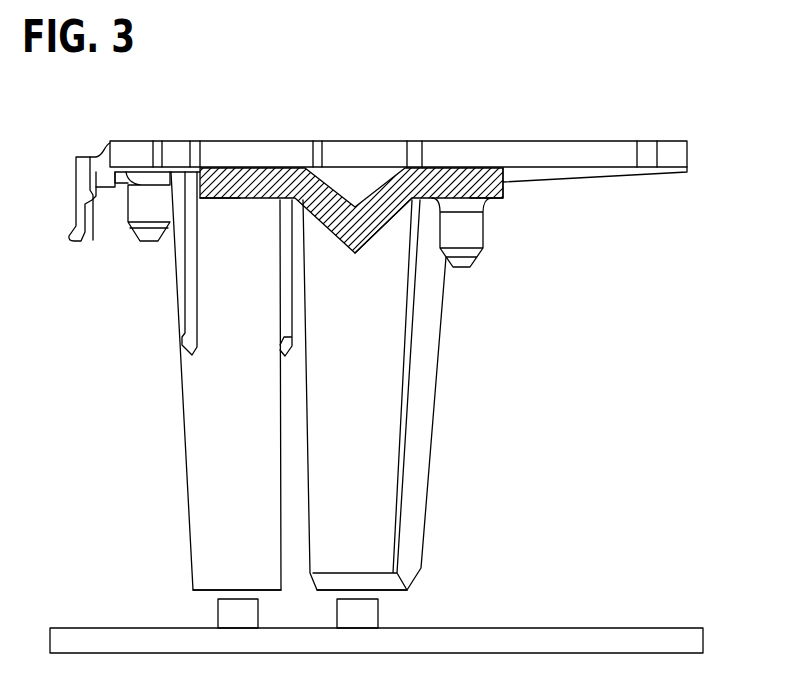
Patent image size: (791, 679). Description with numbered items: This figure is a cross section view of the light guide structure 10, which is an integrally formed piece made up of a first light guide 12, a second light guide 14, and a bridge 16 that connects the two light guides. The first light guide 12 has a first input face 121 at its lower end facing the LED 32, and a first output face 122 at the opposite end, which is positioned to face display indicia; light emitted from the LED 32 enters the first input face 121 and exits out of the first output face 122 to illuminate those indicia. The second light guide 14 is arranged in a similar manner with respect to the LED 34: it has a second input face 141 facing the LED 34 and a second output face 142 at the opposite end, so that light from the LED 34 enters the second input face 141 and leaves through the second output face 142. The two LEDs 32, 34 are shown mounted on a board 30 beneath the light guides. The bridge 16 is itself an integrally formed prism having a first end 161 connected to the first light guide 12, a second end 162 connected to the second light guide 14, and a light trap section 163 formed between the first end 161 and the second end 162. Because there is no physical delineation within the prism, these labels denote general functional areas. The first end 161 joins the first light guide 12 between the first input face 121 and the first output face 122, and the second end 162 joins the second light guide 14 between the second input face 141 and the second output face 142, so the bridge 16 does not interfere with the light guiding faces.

The light guide structure 10 is at (683, 141).
The first light guide 12 is at (188, 460).
The second light guide 14 is at (432, 452).
The bridge 16 is at (330, 243).
The circuit board 30 is at (655, 628).
The LED 32 is at (218, 620).
The LED 34 is at (378, 618).
The first input face 121 is at (195, 590).
The first output face 122 is at (205, 141).
The second input face 141 is at (410, 590).
The second output face 142 is at (394, 141).
The first end 161 is at (218, 200).
The second end 162 is at (503, 193).
The light trap section 163 is at (368, 245).